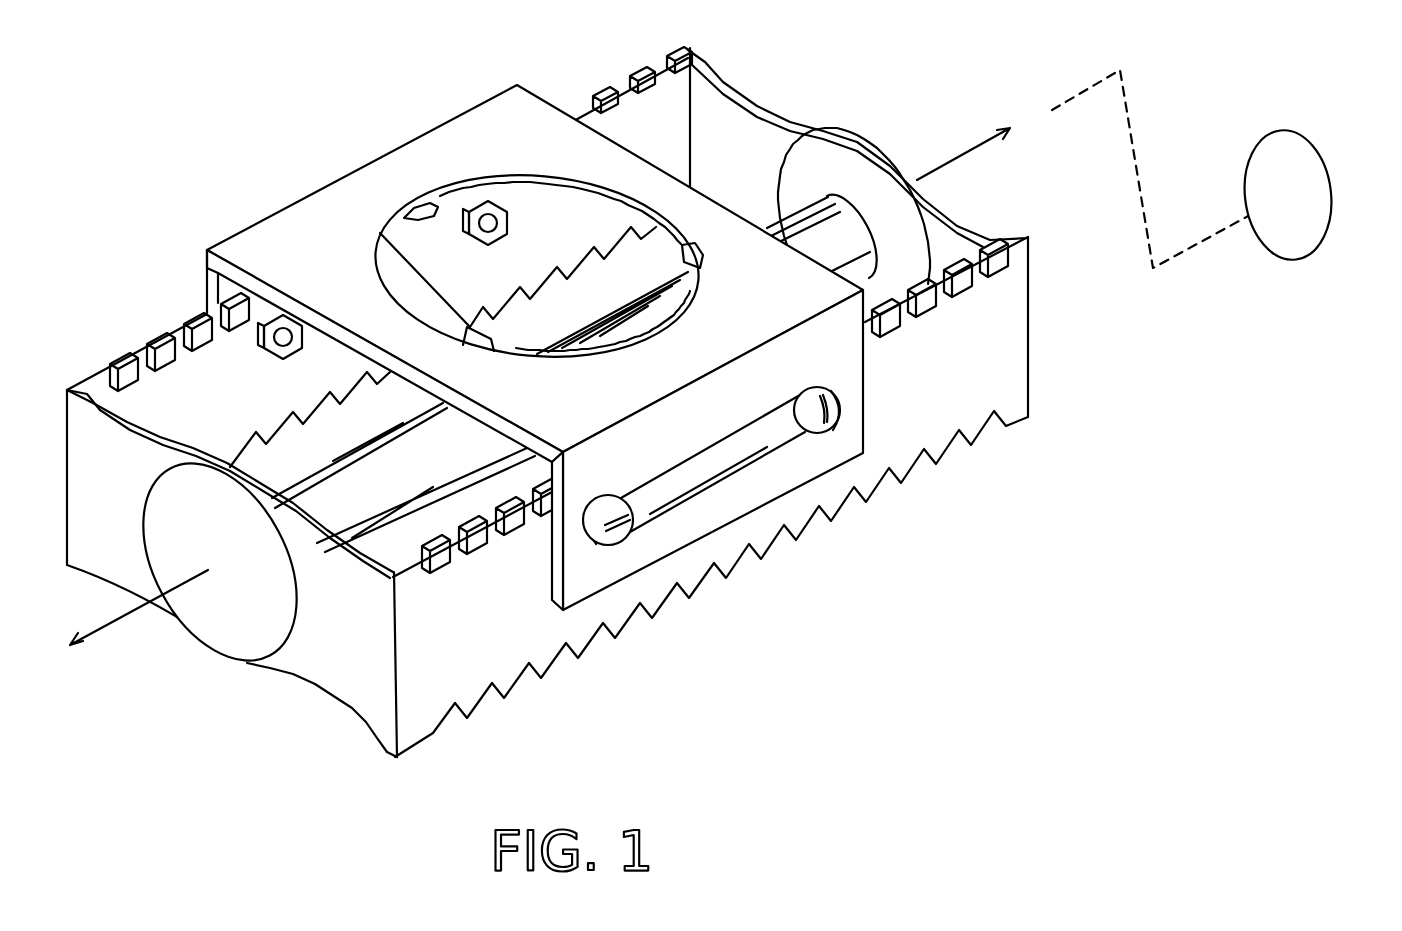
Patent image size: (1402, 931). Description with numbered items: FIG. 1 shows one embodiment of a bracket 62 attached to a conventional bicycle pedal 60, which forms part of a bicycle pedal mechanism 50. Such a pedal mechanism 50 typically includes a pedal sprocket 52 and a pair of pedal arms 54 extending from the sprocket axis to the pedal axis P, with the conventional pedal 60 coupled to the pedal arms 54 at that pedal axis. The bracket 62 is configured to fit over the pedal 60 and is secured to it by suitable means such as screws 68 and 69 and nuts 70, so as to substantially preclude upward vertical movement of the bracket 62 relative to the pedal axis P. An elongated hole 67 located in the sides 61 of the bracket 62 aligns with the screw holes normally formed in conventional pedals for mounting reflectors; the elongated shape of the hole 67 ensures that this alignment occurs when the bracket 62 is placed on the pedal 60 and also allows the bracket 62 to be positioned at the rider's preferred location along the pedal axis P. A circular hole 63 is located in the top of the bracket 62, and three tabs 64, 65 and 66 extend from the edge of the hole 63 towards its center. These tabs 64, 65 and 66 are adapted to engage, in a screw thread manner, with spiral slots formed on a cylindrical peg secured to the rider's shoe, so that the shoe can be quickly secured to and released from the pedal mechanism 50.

The bicycle pedal mechanism 50 is at (1182, 312).
The pedal sprocket 52 is at (1293, 131).
The pedal arm 54 is at (1122, 103).
The bicycle pedal 60 is at (983, 303).
The sides of the bracket 61 is at (830, 343).
The bracket 62 is at (500, 140).
The circular hole 63 is at (578, 180).
The tab 64 is at (700, 247).
The tab 65 is at (416, 208).
The tab 66 is at (380, 233).
The elongated hole 67 is at (700, 473).
The screw 68 is at (807, 424).
The screw 69 is at (620, 543).
The nut 70 is at (211, 312).